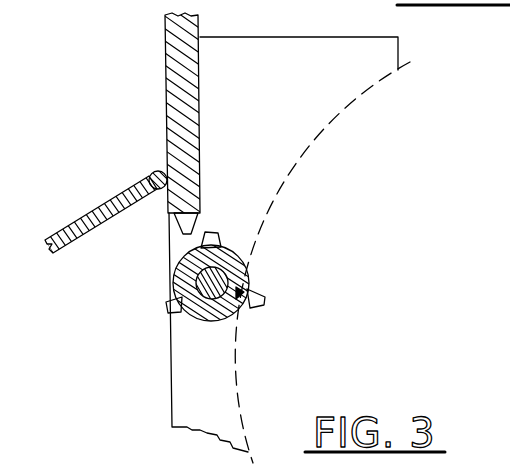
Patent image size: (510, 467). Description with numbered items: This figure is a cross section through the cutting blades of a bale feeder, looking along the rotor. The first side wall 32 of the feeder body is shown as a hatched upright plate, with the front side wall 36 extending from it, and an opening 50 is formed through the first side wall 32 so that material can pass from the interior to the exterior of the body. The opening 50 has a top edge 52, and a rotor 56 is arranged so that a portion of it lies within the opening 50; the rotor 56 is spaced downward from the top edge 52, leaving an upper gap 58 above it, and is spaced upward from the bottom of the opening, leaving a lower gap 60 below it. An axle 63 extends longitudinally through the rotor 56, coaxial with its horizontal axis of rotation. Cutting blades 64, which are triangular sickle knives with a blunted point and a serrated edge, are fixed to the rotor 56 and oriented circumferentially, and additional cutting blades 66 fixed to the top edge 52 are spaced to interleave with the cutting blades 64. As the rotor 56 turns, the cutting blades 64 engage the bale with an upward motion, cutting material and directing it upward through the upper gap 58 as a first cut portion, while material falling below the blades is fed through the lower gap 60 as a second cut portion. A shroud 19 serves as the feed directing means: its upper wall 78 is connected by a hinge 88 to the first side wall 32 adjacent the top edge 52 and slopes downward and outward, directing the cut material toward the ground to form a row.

The shroud 19 is at (95, 170).
The first side wall 32 is at (177, 80).
The front side wall 36 is at (255, 52).
The opening 50 is at (344, 348).
The top edge 52 is at (175, 220).
The rotor 56 is at (205, 306).
The upper gap 58 is at (176, 251).
The lower gap 60 is at (214, 406).
The axle 63 is at (215, 282).
The cutting blades 64 is at (218, 240).
The additional cutting blades 66 is at (198, 221).
The upper wall 78 is at (98, 205).
The hinge 88 is at (153, 171).